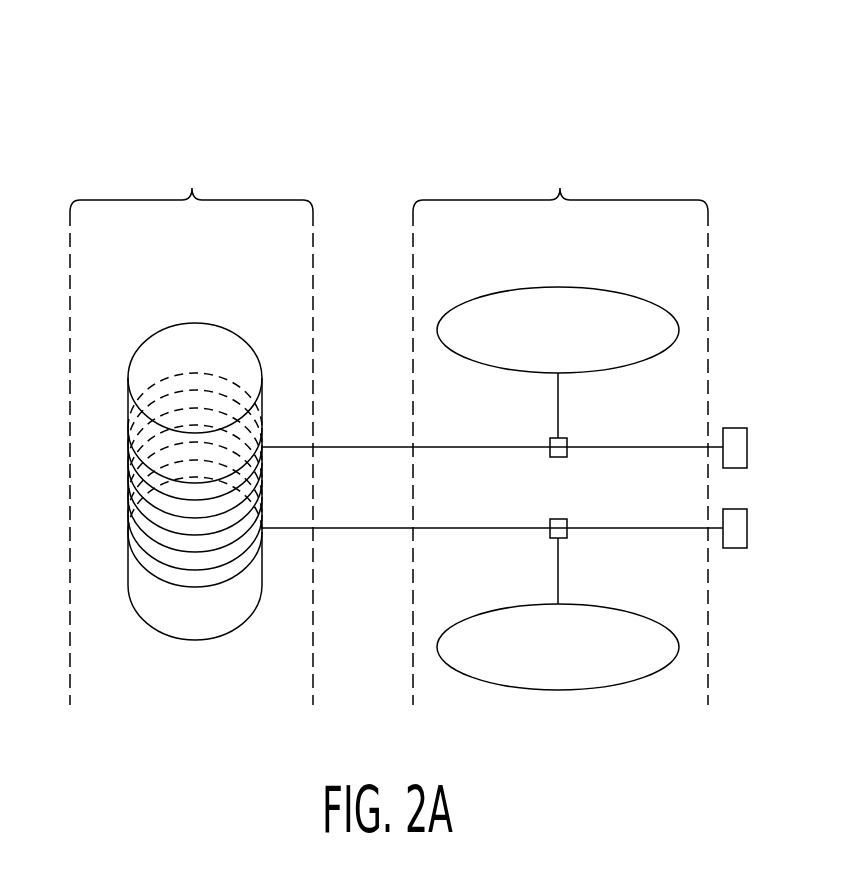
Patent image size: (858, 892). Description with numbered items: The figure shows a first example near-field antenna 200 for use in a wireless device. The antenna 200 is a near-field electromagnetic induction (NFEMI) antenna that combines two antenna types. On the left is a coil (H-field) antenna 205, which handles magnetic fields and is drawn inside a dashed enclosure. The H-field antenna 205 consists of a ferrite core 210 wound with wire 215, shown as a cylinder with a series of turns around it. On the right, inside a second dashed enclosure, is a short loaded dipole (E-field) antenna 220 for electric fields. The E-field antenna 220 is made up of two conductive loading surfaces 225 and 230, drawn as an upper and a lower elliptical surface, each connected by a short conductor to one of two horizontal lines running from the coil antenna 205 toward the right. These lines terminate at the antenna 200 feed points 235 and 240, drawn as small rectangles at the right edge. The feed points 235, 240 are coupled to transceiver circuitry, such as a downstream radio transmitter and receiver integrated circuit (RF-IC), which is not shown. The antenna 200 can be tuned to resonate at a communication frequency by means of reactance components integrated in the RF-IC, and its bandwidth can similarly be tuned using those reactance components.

The near-field antenna 200 is at (109, 84).
The coil (H-field) antenna 205 is at (191, 428).
The ferrite core 210 is at (203, 325).
The wire 215 is at (190, 588).
The short loaded dipole (E-field) antenna 220 is at (560, 428).
The conductive loading surface 225 is at (613, 292).
The conductive loading surface 230 is at (607, 607).
The feed point 235 is at (747, 443).
The feed point 240 is at (747, 533).